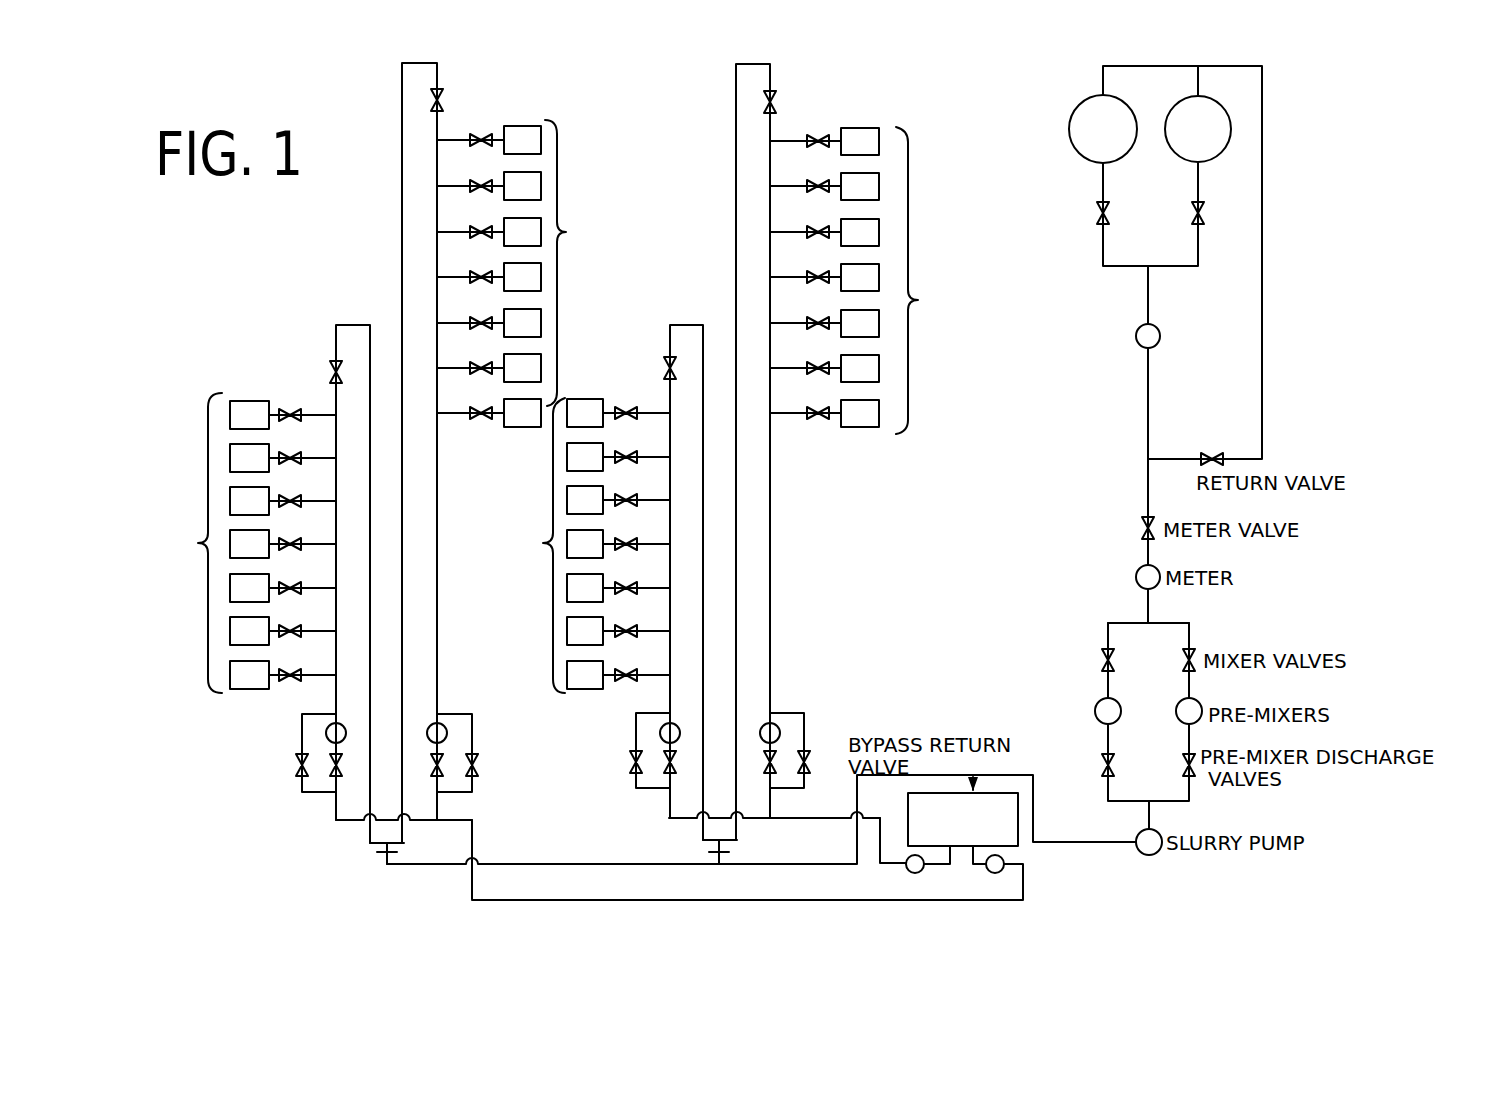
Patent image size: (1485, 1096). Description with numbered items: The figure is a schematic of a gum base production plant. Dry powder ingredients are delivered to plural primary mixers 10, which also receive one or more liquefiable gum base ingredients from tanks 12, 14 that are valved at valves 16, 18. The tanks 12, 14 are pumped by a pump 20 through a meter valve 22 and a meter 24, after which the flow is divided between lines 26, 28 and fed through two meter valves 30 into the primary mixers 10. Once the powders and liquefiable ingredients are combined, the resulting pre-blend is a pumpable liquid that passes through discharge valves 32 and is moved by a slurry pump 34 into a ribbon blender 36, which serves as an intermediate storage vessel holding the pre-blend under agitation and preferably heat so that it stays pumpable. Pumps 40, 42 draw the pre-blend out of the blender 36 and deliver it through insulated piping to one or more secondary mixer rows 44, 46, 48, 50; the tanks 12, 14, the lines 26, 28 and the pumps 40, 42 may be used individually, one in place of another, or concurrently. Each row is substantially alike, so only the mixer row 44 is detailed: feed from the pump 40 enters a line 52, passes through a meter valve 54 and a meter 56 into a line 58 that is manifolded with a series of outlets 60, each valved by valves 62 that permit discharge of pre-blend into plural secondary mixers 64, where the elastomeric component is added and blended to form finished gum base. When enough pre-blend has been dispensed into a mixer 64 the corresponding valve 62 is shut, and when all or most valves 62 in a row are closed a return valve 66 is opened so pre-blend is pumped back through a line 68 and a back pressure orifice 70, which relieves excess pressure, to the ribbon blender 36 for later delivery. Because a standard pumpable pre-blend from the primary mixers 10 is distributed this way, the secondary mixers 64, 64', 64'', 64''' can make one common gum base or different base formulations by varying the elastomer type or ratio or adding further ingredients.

The primary mixers 10 is at (1096, 706).
The tank 12 is at (1085, 157).
The tank 14 is at (1218, 155).
The valve 16 is at (1110, 215).
The valve 18 is at (1205, 215).
The pump 20 is at (1140, 348).
The meter valve 22 is at (1140, 530).
The meter 24 is at (1136, 578).
The line 26 is at (1108, 623).
The line 28 is at (1189, 623).
The meter valves 30 is at (1188, 663).
The discharge valves 32 is at (1186, 765).
The slurry pump 34 is at (1160, 833).
The ribbon blender 36 is at (950, 790).
The pump 40 is at (908, 858).
The pump 42 is at (985, 870).
The secondary mixer row 44 is at (722, 172).
The secondary mixer row 46 is at (612, 362).
The secondary mixer row 48 is at (462, 104).
The secondary mixer row 50 is at (298, 378).
The line 52 is at (772, 805).
The meter valve 54 is at (779, 752).
The meter 56 is at (776, 724).
The line 58 is at (772, 538).
The outlets 60 is at (784, 142).
The valves 62 is at (810, 140).
The secondary mixers 64 is at (899, 280).
The secondary mixers 64' is at (578, 545).
The secondary mixers 64'' is at (521, 273).
The secondary mixers 64''' is at (243, 543).
The return valve 66 is at (775, 100).
The line 68 is at (736, 305).
The back pressure orifice 70 is at (414, 852).